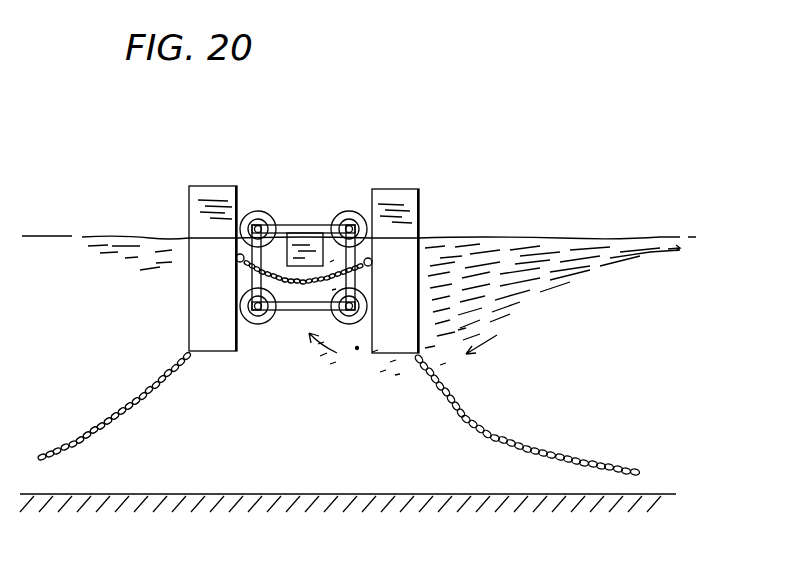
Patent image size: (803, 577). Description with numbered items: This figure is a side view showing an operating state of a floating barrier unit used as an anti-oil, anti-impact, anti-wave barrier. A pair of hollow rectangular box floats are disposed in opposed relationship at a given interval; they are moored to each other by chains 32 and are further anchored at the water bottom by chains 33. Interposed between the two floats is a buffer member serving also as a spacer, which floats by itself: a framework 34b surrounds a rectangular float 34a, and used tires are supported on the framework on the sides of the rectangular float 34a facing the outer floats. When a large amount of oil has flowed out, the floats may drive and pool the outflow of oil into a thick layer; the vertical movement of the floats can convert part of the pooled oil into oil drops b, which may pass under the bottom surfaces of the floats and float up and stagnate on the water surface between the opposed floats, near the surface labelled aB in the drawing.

The chain 32 is at (308, 262).
The chain 33 is at (495, 432).
The rectangular float 34a is at (290, 303).
The framework 34b is at (301, 230).
The water surface / current aB is at (533, 252).
The oil drop b is at (357, 352).